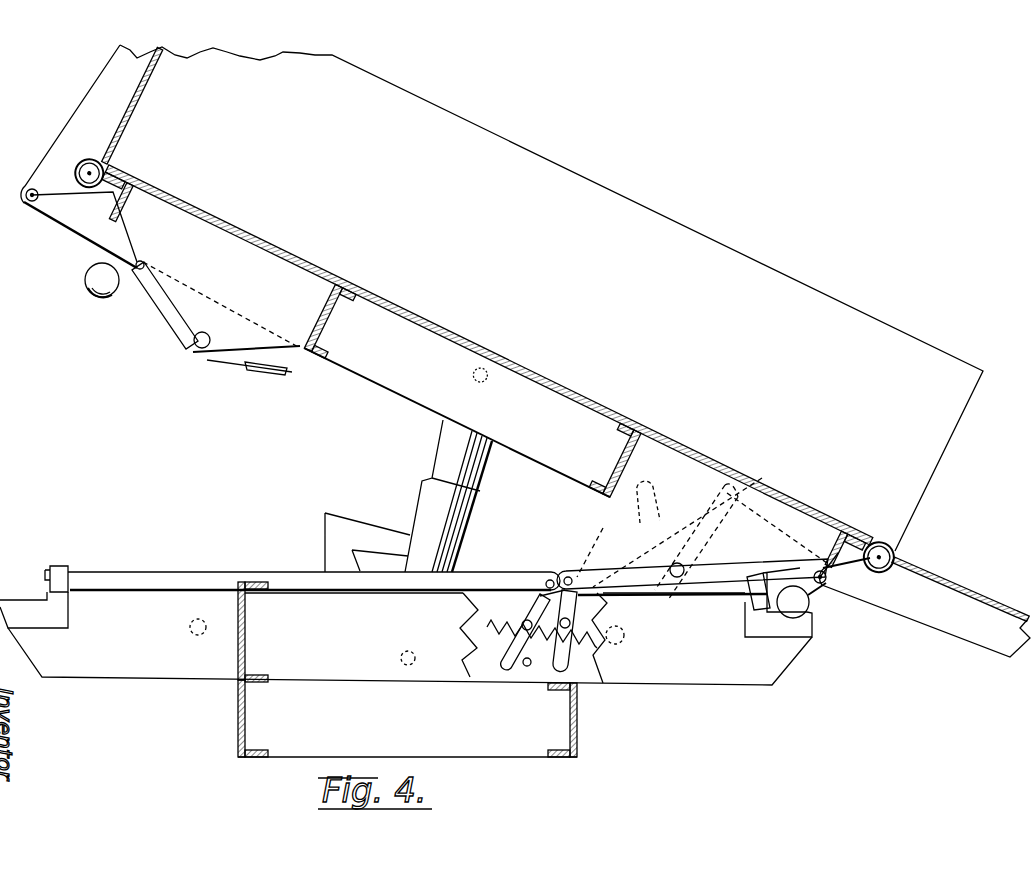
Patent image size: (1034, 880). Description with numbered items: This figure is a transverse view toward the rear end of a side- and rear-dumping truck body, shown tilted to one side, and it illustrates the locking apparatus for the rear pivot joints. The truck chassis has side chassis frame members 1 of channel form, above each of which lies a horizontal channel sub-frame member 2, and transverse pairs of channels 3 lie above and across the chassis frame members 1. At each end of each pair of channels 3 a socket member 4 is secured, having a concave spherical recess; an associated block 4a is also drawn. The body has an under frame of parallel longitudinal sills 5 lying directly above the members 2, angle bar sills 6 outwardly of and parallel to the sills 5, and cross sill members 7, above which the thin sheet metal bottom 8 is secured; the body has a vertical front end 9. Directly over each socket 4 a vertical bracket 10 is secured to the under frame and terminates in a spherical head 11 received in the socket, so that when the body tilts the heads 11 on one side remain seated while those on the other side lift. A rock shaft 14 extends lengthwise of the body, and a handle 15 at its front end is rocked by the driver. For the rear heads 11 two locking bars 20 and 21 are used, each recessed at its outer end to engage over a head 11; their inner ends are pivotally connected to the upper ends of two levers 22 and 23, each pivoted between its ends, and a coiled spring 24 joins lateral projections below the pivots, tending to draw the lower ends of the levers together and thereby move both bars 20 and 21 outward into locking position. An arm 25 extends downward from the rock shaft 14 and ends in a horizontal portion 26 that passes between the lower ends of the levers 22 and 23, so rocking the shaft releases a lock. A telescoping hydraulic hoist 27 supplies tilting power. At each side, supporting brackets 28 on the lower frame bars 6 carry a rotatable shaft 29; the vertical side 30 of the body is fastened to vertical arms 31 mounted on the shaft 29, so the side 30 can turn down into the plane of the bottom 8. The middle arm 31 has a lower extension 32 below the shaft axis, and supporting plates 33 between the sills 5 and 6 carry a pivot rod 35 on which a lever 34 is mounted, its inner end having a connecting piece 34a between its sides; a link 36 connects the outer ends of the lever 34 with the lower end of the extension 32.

The side chassis frame member 1 is at (235, 710).
The horizontal channel sub-frame member 2 is at (237, 625).
The transverse channel 3 is at (118, 665).
The socket member 4 is at (30, 625).
The bracket block 4a is at (60, 563).
The longitudinal sill 5 is at (331, 305).
The angle bar sill 6 is at (128, 200).
The cross sill member 7 is at (393, 377).
The bottom 8 is at (521, 371).
The vertical front end 9 is at (705, 251).
The vertical bracket 10 is at (125, 242).
The spherical head 11 is at (92, 283).
The rock shaft 14 is at (537, 598).
The handle 15 is at (603, 528).
The locking bar 20 is at (690, 593).
The locking bar 21 is at (325, 583).
The lever 22 is at (635, 596).
The lever 23 is at (537, 600).
The coiled spring 24 is at (572, 665).
The arm 25 is at (543, 667).
The horizontal portion 26 is at (523, 663).
The telescoping hydraulic hoist 27 is at (425, 503).
The supporting bracket 28 is at (107, 197).
The rotatable shaft 29 is at (108, 195).
The vertical side 30 is at (143, 100).
The vertical arm 31 is at (115, 68).
The lower extension 32 is at (830, 565).
The supporting plate 33 is at (290, 346).
The lever 34 is at (157, 305).
The connecting piece 34a is at (258, 366).
The pivot rod 35 is at (198, 347).
The link 36 is at (87, 243).